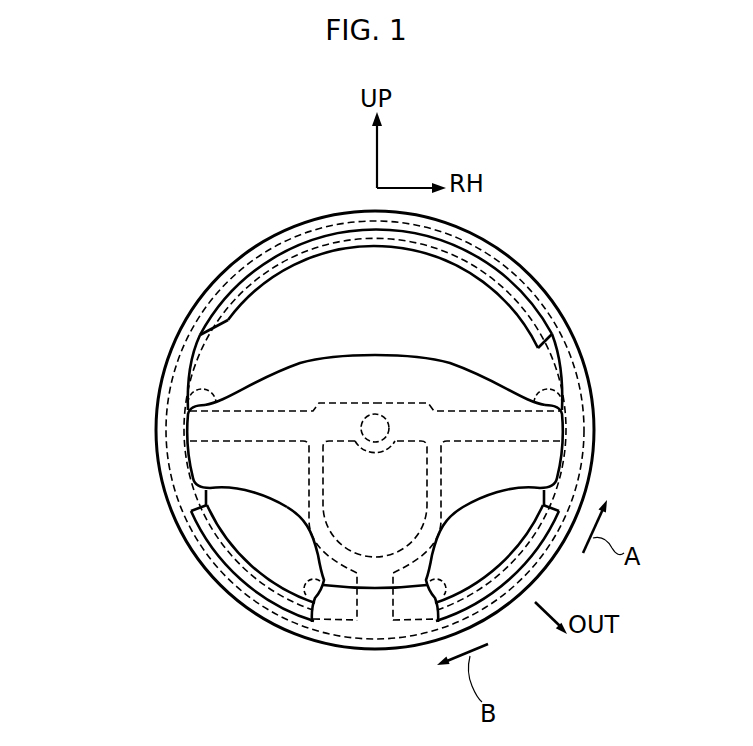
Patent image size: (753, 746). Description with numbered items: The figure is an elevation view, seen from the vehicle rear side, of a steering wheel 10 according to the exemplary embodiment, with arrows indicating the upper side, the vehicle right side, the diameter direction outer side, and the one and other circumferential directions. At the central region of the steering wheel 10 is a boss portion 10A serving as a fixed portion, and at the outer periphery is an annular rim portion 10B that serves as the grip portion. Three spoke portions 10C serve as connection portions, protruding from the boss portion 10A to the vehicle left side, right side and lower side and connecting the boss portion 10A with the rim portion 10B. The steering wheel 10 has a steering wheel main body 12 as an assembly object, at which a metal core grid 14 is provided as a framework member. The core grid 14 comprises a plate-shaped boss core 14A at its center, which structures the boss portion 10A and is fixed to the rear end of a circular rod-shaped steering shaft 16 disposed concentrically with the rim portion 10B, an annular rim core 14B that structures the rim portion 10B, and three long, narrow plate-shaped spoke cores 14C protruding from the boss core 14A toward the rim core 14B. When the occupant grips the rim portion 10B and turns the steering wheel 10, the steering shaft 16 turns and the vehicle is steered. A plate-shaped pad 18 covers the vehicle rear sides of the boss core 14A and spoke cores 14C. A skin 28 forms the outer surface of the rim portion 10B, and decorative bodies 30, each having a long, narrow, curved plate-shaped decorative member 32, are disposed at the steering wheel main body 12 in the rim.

The steering wheel 10 is at (179, 242).
The boss portion 10A is at (378, 353).
The rim portion 10B is at (510, 257).
The spoke portions 10C is at (196, 396).
The steering wheel main body 12 is at (169, 357).
The core grid 14 is at (320, 402).
The boss core 14A is at (429, 402).
The rim core 14B is at (207, 475).
The spoke cores 14C is at (207, 491).
The steering shaft 16 is at (384, 417).
The pad 18 is at (288, 370).
The skin 28 is at (583, 355).
The decorative bodies 30 is at (350, 421).
The decorative member 32 is at (363, 249).